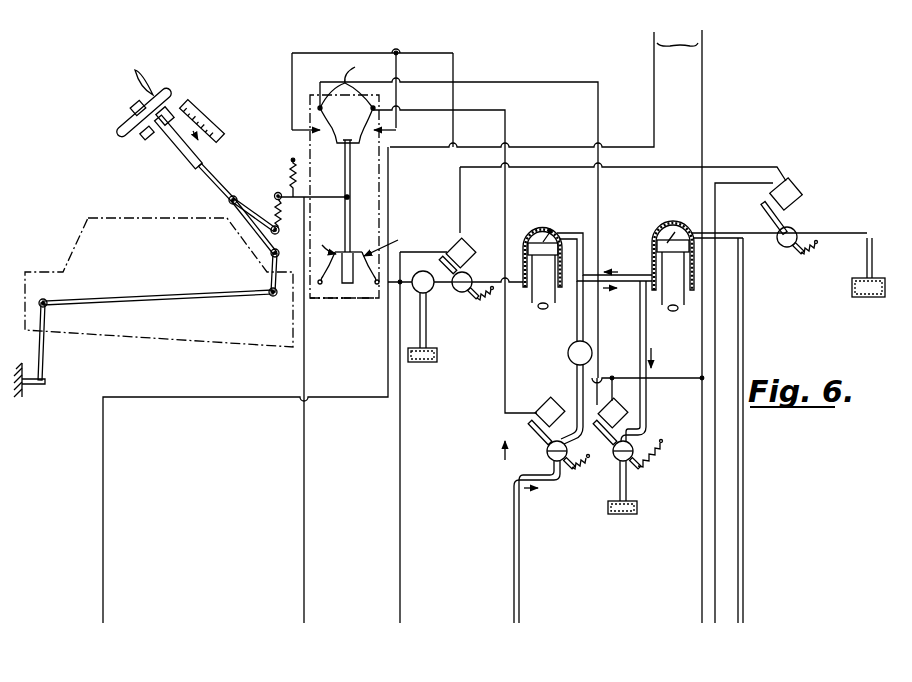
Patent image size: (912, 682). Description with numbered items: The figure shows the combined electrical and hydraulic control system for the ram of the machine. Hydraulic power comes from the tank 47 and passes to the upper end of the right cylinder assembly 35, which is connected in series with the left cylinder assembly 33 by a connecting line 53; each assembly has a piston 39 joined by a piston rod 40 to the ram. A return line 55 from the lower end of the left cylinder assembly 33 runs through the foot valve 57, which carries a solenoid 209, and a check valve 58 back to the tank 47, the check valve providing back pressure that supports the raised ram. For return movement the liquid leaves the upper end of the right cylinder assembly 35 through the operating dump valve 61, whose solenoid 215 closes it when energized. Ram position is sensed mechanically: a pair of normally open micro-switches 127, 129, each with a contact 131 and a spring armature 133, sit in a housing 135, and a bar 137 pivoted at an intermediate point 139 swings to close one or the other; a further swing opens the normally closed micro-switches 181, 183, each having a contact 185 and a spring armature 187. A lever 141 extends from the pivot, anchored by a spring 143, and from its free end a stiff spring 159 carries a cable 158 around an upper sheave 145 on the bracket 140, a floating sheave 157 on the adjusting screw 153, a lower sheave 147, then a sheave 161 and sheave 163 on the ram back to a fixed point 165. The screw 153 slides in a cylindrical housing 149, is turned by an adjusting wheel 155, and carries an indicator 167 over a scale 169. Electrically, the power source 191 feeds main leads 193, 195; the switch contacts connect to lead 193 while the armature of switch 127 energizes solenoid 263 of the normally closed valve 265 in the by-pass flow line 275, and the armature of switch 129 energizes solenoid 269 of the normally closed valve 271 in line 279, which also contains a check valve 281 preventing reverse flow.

The left cylinder assembly 33 is at (537, 250).
The right cylinder assembly 35 is at (748, 255).
The piston 39 is at (550, 231).
The piston rod 40 is at (547, 307).
The tank 47 is at (424, 363).
The connecting line 53 is at (623, 278).
The return line 55 is at (495, 282).
The foot valve 57 is at (460, 294).
The check valve 58 is at (427, 270).
The operating dump valve 61 is at (797, 230).
The micro-switch 127 is at (313, 117).
The micro-switch 129 is at (381, 104).
The contact 131 is at (310, 132).
The spring armature 133 is at (360, 88).
The housing 135 is at (382, 193).
The bar 137 is at (351, 168).
The pivotal point 139 is at (350, 199).
The bracket 140 is at (136, 133).
The lever 141 is at (318, 196).
The spring 143 is at (290, 178).
The sheave 145 is at (280, 230).
The sheave 147 is at (283, 252).
The cylindrical housing 149 is at (180, 150).
The adjusting screw 153 is at (213, 172).
The adjusting wheel 155 is at (139, 91).
The floating sheave 157 is at (228, 201).
The cable 158 is at (182, 294).
The spring 159 is at (291, 213).
The sheave 161 is at (270, 290).
The sheave 163 is at (50, 305).
The fixed point 165 is at (32, 384).
The indicator 167 is at (186, 130).
The scale 169 is at (203, 112).
The micro-switch 181 is at (327, 310).
The micro-switch 183 is at (364, 310).
The contact 185 is at (348, 275).
The spring armature 187 is at (371, 242).
The power source 191 is at (680, 45).
The main lead 193 is at (390, 213).
The main lead 195 is at (705, 117).
The solenoid 209 is at (460, 245).
The solenoid 215 is at (801, 191).
The solenoid 263 is at (632, 396).
The solenoid controlled valve 265 is at (616, 456).
The solenoid 269 is at (567, 396).
The solenoid controlled valve 271 is at (549, 459).
The flow line 275 is at (649, 338).
The line 279 is at (572, 333).
The check valve 281 is at (567, 357).